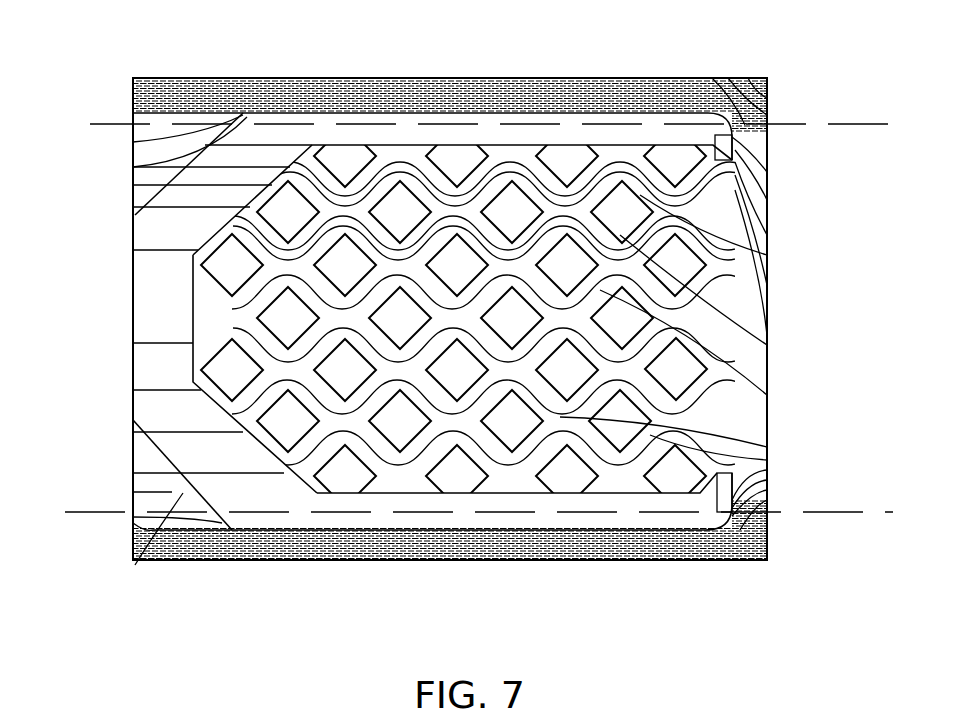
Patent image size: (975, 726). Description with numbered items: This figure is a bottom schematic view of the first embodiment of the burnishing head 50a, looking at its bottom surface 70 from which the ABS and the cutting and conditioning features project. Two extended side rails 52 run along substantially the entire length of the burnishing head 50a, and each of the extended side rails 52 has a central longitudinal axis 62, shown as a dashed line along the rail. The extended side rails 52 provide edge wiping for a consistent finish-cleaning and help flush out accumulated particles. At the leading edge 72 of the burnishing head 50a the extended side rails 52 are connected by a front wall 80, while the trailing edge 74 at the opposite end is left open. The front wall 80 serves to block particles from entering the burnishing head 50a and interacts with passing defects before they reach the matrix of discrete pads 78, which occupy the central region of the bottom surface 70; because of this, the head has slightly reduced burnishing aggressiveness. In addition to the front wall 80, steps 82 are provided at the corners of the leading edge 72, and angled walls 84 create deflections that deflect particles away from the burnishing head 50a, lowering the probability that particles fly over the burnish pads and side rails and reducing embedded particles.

The burnishing head 50a is at (464, 322).
The extended side rails 52 is at (480, 124).
The central longitudinal axes 62 is at (885, 124).
The bottom surface 70 is at (746, 80).
The leading edge 72 is at (90, 401).
The trailing edge 74 is at (815, 342).
The discrete pads 78 is at (720, 490).
The front wall 80 is at (133, 308).
The steps 82 is at (133, 153).
The angled walls 84 is at (205, 142).